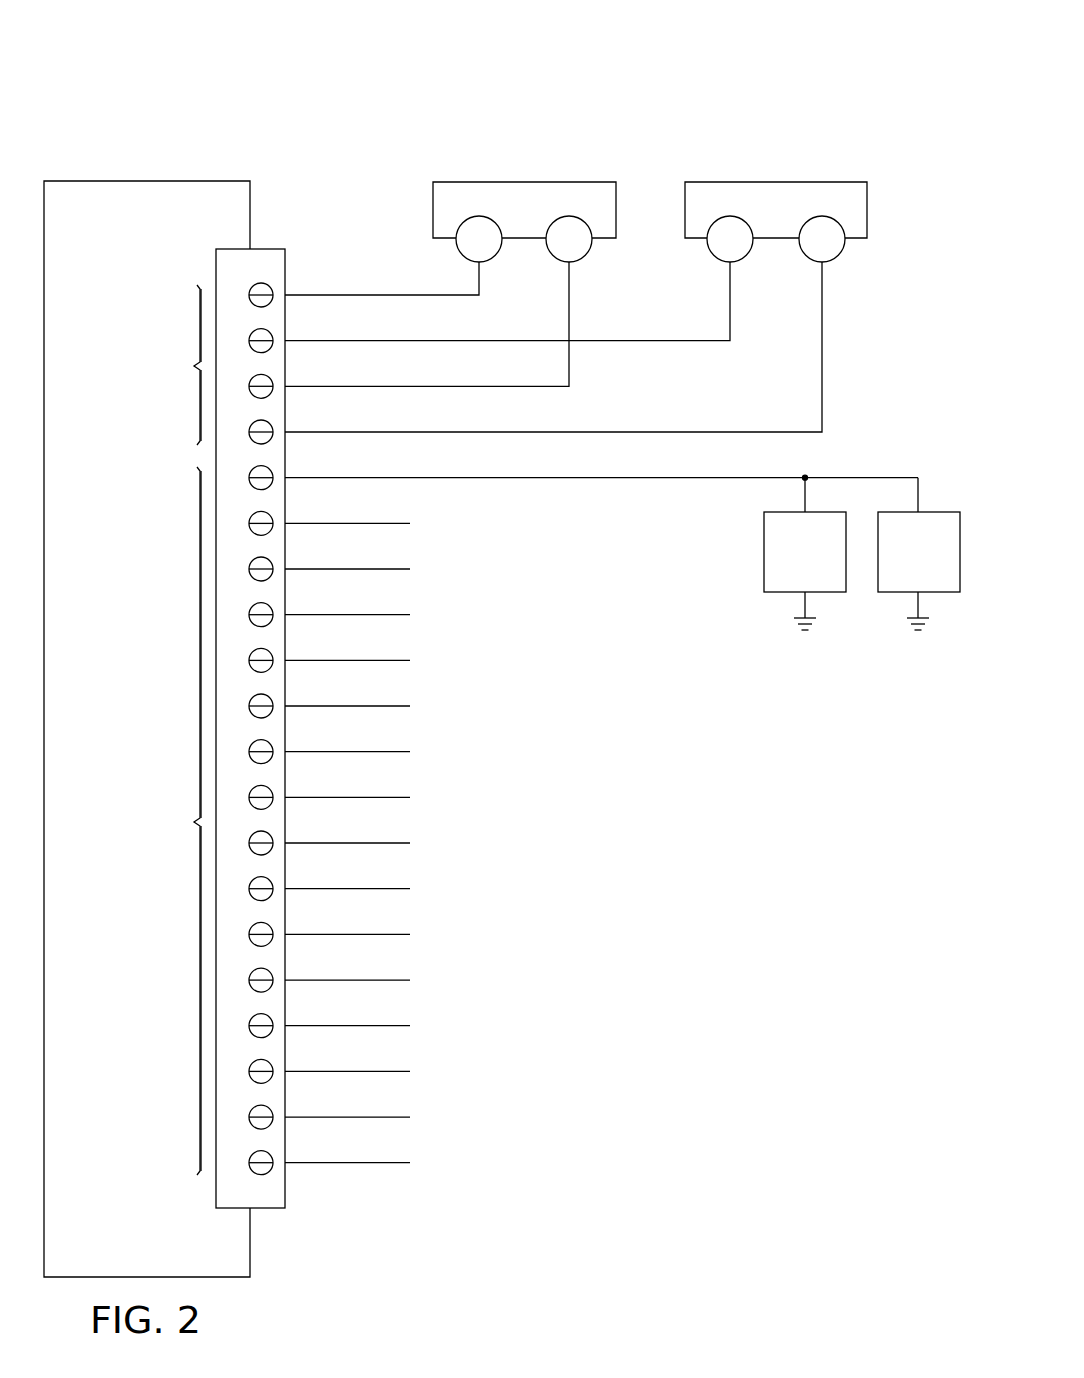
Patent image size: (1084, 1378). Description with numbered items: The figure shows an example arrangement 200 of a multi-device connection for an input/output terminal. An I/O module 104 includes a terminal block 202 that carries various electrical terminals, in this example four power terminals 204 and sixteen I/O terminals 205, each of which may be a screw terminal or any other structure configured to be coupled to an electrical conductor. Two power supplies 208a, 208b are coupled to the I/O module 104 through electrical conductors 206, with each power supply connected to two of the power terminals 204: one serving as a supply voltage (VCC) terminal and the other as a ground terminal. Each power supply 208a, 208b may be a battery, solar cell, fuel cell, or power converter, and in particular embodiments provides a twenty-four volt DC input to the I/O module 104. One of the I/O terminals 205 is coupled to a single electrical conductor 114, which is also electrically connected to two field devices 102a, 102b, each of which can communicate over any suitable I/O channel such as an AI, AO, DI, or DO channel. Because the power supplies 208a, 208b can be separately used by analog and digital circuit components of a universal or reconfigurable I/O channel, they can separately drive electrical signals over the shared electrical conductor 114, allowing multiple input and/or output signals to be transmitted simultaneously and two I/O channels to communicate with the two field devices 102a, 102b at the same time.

The I/O system wiring arrangement 200 is at (398, 80).
The I/O module 104 is at (146, 175).
The terminal block 202 is at (278, 236).
The power terminals 204 is at (192, 366).
The I/O terminals 205 is at (192, 822).
The electrical conductors 206 is at (822, 338).
The electrical conductor 114 is at (866, 477).
The power supply 208a is at (550, 124).
The power supply 208b is at (803, 124).
The field device 102a is at (834, 566).
The field device 102b is at (948, 566).